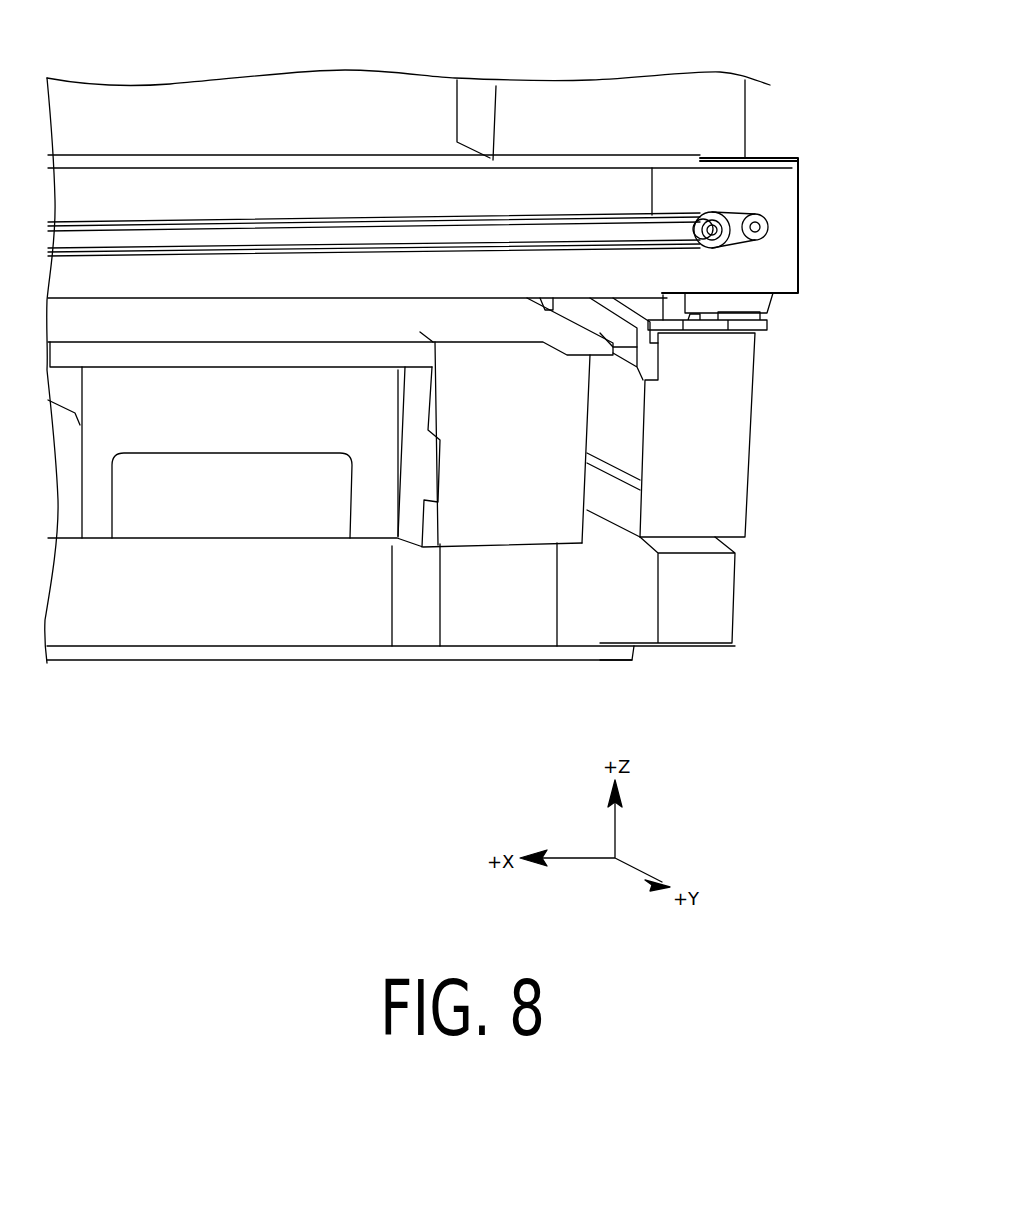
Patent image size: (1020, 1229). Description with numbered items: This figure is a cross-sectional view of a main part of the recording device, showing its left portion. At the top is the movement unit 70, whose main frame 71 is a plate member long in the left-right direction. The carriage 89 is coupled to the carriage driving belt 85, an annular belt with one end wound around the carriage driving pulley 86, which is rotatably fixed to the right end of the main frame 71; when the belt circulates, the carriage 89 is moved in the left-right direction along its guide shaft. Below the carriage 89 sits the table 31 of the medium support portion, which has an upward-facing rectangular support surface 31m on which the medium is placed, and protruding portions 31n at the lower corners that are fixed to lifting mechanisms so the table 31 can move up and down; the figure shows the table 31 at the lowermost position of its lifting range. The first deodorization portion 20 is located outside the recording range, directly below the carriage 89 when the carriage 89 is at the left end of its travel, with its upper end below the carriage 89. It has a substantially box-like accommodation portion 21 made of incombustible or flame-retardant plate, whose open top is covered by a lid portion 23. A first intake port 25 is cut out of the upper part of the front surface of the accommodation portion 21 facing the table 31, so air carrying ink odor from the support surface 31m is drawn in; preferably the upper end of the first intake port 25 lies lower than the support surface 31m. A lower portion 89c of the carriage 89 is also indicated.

The first deodorization portion 20 is at (755, 423).
The accommodation portion 21 is at (728, 373).
The lid portion 23 is at (767, 323).
The first intake port 25 is at (650, 361).
The table 31 is at (152, 326).
The support surface 31m is at (212, 323).
The protruding portions 31n is at (92, 517).
The movement unit 70 is at (756, 141).
The main frame 71 is at (783, 203).
The carriage driving belt 85 is at (640, 213).
The carriage driving pulley 86 is at (705, 208).
The carriage 89 is at (453, 103).
The guide block lower portion 89c is at (772, 305).